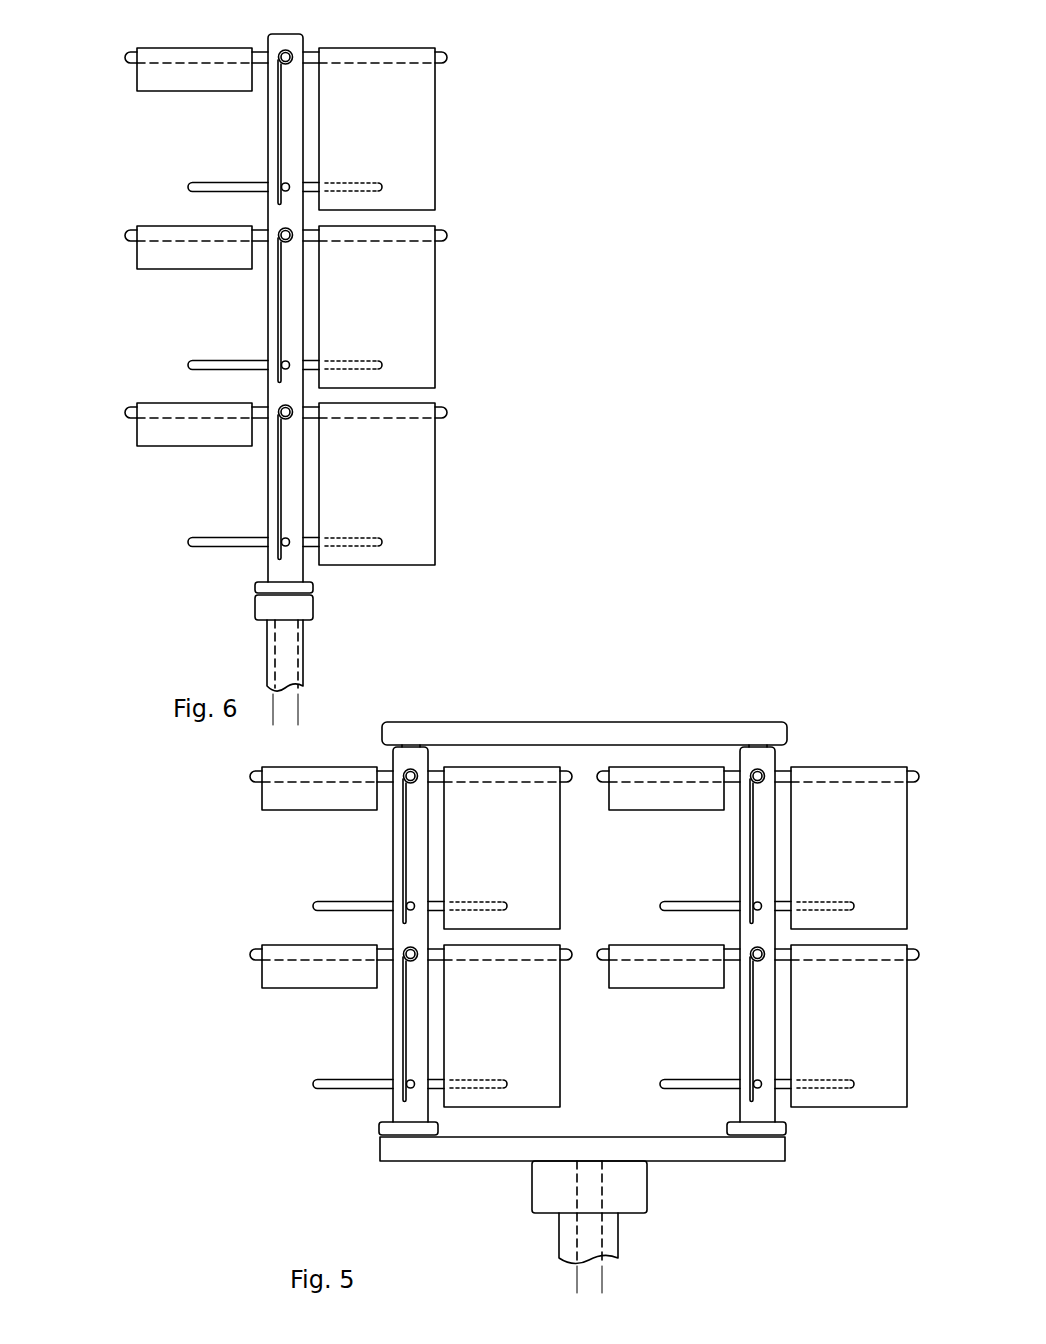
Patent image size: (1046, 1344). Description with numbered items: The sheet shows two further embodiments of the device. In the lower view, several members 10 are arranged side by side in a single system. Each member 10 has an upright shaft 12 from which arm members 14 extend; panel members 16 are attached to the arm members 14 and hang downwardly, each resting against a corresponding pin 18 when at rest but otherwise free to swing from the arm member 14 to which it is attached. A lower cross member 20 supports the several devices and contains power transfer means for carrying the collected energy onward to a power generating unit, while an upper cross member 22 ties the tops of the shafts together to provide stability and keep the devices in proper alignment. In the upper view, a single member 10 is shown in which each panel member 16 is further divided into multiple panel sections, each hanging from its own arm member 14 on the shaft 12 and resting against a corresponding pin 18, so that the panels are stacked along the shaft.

In FIG. 6, the member 10 is at (800, 143).
In FIG. 5, the member 10 is at (800, 656).
In FIG. 6, the shaft 12 is at (271, 166).
In FIG. 5, the shaft 12 is at (393, 830).
In FIG. 6, the arm member 14 is at (128, 412).
In FIG. 5, the arm member 14 is at (250, 955).
In FIG. 6, the panel member 16 is at (530, 155).
In FIG. 5, the panel member 16 is at (522, 1038).
In FIG. 6, the pin 18 is at (218, 537).
In FIG. 5, the pin 18 is at (314, 1086).
In FIG. 5, the cross member 20 is at (678, 1153).
In FIG. 5, the cross member 22 is at (640, 730).